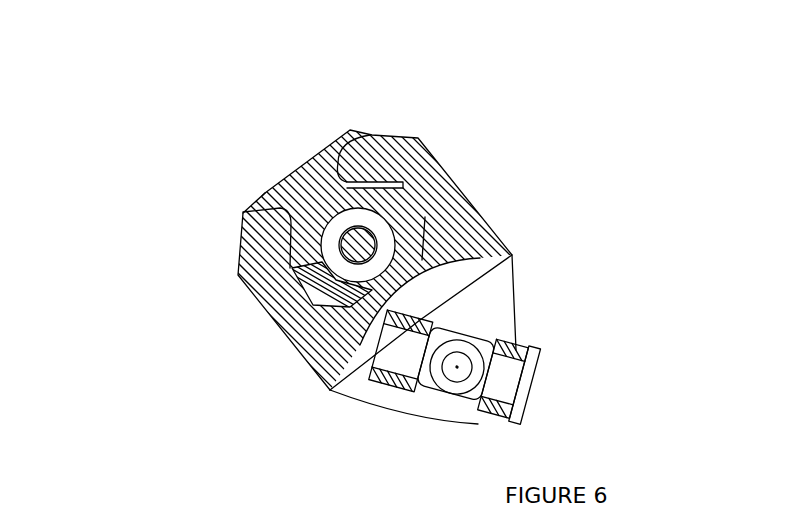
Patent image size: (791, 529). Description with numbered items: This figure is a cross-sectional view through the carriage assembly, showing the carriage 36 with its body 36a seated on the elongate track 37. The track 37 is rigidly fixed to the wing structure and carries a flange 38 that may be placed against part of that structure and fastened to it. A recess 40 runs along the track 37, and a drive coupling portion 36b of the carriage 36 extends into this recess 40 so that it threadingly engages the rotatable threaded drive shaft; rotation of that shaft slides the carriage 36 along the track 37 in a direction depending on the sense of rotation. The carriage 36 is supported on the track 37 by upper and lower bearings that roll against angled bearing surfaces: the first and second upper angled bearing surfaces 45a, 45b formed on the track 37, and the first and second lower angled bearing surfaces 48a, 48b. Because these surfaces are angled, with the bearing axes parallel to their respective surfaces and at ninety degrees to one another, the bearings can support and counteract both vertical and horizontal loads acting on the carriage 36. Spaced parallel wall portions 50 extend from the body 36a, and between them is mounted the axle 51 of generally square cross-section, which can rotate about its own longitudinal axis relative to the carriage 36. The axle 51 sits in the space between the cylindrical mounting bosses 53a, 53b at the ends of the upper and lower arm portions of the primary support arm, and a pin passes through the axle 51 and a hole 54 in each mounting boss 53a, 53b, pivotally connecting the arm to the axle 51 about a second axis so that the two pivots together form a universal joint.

The carriage 36 is at (230, 328).
The body 36a is at (290, 340).
The drive coupling portion 36b is at (373, 230).
The elongate track 37 is at (282, 148).
The flange 38 is at (262, 196).
The recess 40 is at (292, 262).
The first upper angled bearing surface 45a is at (372, 180).
The second upper angled bearing surface 45b is at (428, 245).
The first lower angled bearing surface 48a is at (262, 232).
The second lower angled bearing surface 48b is at (337, 320).
The wall portions 50 is at (488, 303).
The axle 51 is at (468, 395).
The mounting boss 53a is at (520, 349).
The mounting boss 53b is at (382, 388).
The hole 54 is at (540, 384).